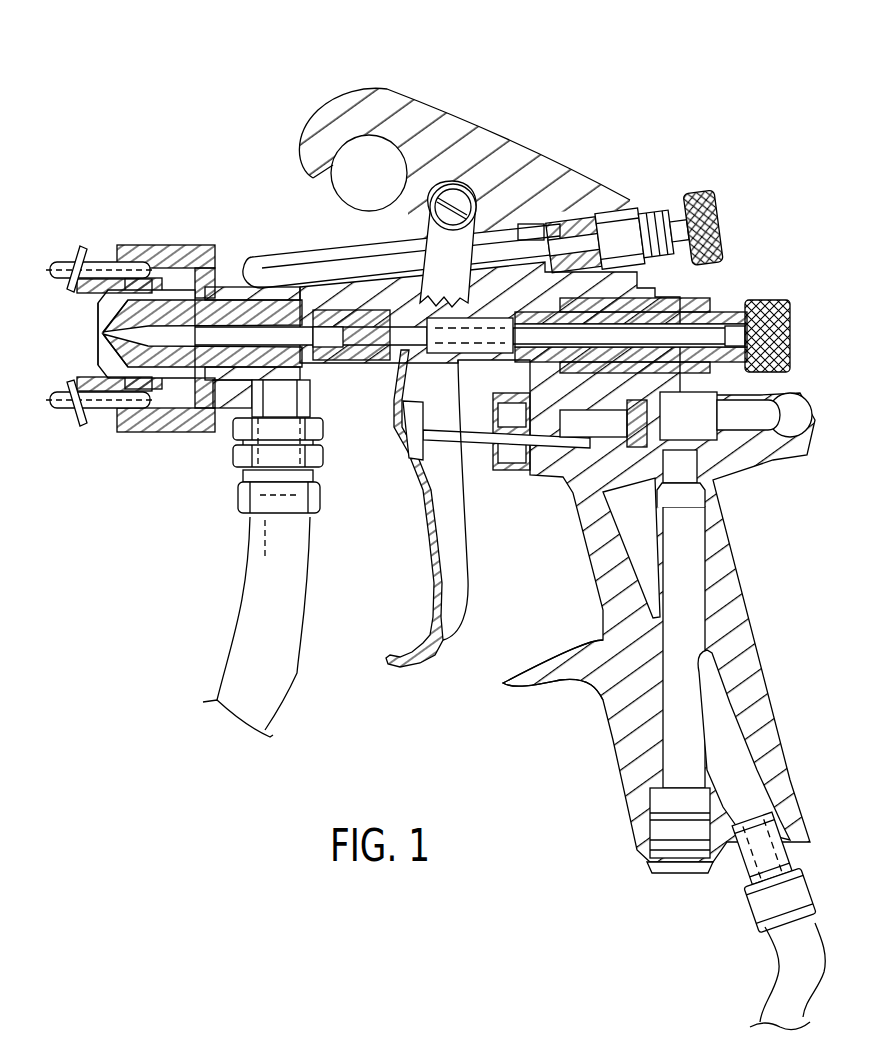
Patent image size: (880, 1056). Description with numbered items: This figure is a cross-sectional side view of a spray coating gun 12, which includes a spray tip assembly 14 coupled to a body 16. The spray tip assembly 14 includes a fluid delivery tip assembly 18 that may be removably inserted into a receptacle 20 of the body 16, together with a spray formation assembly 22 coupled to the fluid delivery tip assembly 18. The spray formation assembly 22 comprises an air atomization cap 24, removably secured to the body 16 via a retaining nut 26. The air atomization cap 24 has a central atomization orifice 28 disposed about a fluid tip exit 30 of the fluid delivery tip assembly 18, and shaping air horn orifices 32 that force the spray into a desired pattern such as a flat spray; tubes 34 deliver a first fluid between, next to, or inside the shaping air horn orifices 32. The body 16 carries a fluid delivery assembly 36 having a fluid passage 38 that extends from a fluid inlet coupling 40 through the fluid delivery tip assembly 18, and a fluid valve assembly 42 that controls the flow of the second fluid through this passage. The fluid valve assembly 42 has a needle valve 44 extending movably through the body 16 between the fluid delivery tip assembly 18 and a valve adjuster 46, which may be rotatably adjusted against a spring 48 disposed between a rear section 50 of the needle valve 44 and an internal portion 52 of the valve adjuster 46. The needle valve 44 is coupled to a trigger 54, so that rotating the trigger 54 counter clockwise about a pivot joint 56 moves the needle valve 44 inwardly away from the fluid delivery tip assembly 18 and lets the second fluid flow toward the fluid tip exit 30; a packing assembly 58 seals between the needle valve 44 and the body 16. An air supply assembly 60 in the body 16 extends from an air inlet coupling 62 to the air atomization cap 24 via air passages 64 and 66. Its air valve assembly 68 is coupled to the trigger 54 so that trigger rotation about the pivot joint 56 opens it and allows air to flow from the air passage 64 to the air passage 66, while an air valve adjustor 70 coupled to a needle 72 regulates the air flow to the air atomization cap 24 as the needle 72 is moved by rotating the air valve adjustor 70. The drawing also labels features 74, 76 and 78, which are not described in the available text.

The spray coating gun 12 is at (614, 40).
The spray tip assembly 14 is at (110, 476).
The body 16 is at (585, 124).
The fluid delivery tip assembly 18 is at (178, 305).
The receptacle 20 is at (225, 380).
The spray formation assembly 22 is at (38, 252).
The air atomization cap 24 is at (55, 410).
The retaining nut 26 is at (165, 415).
The central atomization orifice 28 is at (95, 345).
The fluid tip exit 30 is at (100, 333).
The shaping air horn orifice 32 is at (75, 290).
The tubes 34 is at (80, 262).
The fluid delivery assembly 36 is at (215, 490).
The fluid passage 38 is at (268, 525).
The fluid inlet coupling 40 is at (315, 512).
The fluid valve assembly 42 is at (228, 337).
The needle valve 44 is at (470, 340).
The valve adjuster 46 is at (780, 288).
The spring 48 is at (725, 325).
The rear section 50 is at (512, 308).
The internal portion 52 is at (740, 350).
The trigger 54 is at (477, 577).
The pivot joint 56 is at (455, 187).
The packing assembly 58 is at (330, 350).
The air supply assembly 60 is at (765, 572).
The air inlet coupling 62 is at (767, 927).
The air passage 64 is at (780, 878).
The air passage 66 is at (526, 220).
The air valve assembly 68 is at (690, 418).
The air valve adjustor 70 is at (692, 172).
The needle 72 is at (392, 245).
The handle lip 74 is at (600, 700).
The air hose 76 is at (767, 987).
The fluid hose 78 is at (295, 673).